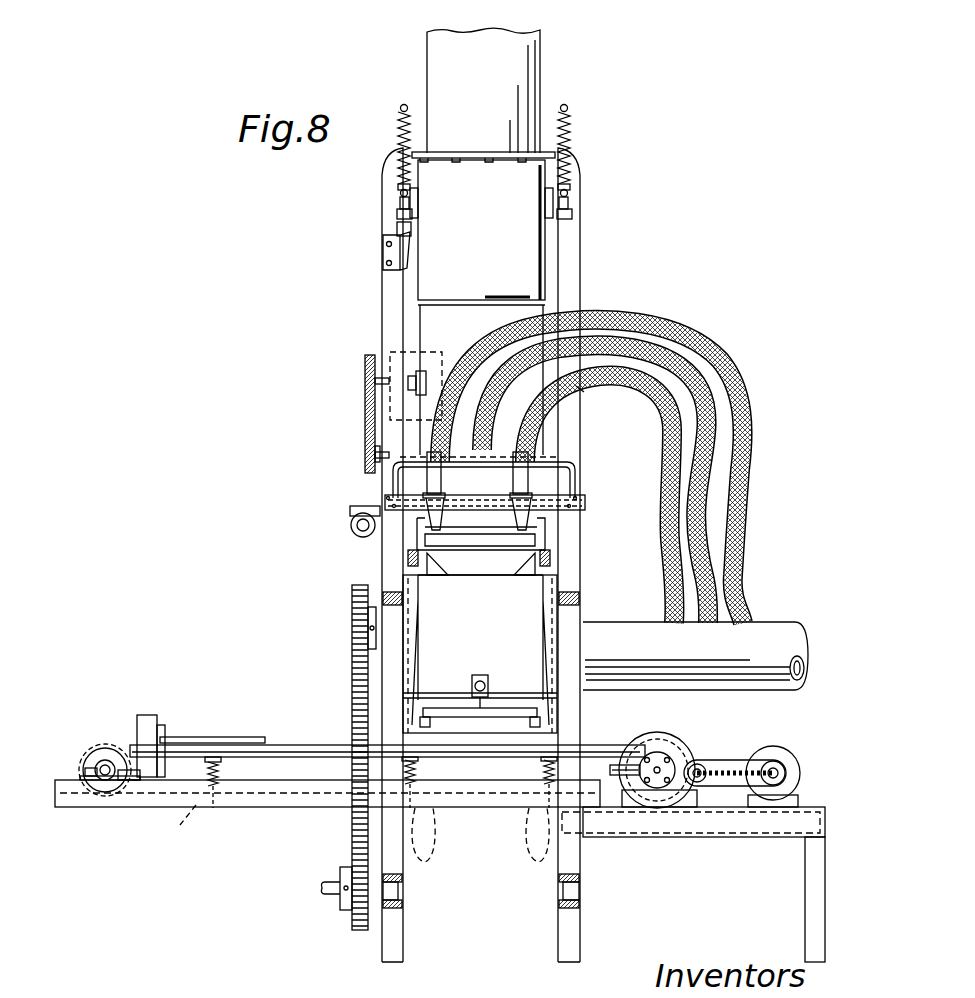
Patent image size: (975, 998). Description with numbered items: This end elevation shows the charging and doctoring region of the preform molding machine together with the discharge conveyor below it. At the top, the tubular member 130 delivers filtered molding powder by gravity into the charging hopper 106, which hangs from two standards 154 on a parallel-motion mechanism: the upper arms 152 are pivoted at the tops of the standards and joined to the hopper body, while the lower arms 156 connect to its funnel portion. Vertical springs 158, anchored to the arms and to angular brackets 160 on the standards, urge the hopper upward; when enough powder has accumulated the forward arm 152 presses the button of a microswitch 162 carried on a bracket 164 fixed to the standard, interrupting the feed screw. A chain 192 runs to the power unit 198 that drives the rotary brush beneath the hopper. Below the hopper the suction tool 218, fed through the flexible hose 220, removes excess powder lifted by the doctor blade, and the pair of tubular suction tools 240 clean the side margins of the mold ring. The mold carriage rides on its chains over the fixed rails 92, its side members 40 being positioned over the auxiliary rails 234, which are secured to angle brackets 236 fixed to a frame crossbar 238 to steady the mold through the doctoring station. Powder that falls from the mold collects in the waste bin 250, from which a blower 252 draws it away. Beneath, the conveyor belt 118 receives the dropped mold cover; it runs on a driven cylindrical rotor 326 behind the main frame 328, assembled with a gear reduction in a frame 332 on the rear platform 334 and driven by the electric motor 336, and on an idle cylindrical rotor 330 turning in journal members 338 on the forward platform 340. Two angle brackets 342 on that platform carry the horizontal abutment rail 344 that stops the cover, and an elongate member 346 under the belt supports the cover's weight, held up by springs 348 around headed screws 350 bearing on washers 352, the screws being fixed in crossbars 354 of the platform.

The tubular member 130 is at (506, 90).
The charging hopper 106 is at (522, 308).
The standards 154 is at (475, 555).
The angular brackets 160 is at (494, 134).
The vertical springs 158 is at (475, 161).
The upper arms 152 is at (473, 200).
The microswitch 162 is at (433, 220).
The bracket 164 is at (437, 251).
The power unit 198 is at (380, 362).
The lower arms 156 is at (464, 404).
The chain 192 is at (344, 414).
The flexible hose 220 is at (591, 452).
The suction tool 218 is at (512, 486).
The tubular suction tools 240 is at (477, 493).
The side members 40 is at (470, 539).
The fixed rails 92 is at (471, 566).
The angle brackets 236 is at (481, 584).
The crossbar 238 is at (480, 610).
The auxiliary rails 234 is at (480, 654).
The waste bin 250 is at (519, 701).
The blower 252 is at (695, 675).
The conveyor belt 118 is at (387, 720).
The elongate member 346 is at (386, 806).
The horizontal abutment rail 344 is at (164, 719).
The angle brackets 342 is at (211, 731).
The idle cylindrical rotor 330 is at (97, 753).
The journal members 338 is at (111, 745).
The headed screws 350 is at (243, 738).
The washers 352 is at (382, 771).
The springs 348 is at (344, 827).
The crossbars 354 is at (333, 837).
The platform 340 is at (327, 825).
The driven cylindrical rotor 326 is at (651, 736).
The frame 332 is at (667, 764).
The electric motor 336 is at (757, 764).
The main frame 328 is at (704, 884).
The platform 334 is at (691, 855).